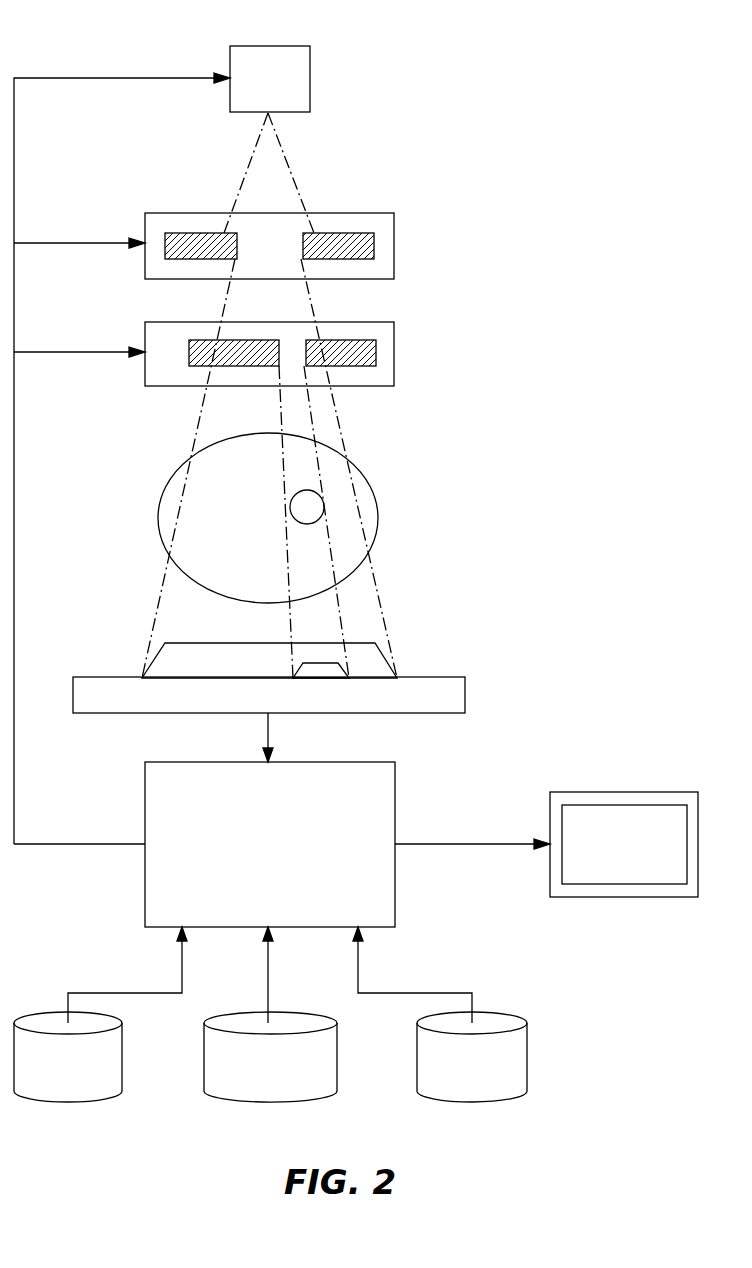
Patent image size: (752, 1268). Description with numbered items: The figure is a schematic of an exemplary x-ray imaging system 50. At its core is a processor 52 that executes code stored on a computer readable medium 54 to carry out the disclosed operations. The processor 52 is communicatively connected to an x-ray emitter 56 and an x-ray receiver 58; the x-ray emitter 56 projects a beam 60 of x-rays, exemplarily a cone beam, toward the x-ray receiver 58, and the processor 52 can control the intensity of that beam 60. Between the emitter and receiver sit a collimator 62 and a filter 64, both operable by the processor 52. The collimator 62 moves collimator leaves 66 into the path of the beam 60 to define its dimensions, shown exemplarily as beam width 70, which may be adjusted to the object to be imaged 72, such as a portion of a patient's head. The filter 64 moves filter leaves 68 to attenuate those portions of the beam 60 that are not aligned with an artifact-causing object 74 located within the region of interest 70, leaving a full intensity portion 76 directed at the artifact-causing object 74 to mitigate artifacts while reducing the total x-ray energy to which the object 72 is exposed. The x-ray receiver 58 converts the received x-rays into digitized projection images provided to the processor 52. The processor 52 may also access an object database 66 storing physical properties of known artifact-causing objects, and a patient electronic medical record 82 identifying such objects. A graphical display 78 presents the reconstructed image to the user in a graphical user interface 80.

The x-ray imaging system 50 is at (580, 318).
The processor 52 is at (397, 794).
The computer readable medium 54 is at (124, 1058).
The x-ray emitter 56 is at (311, 77).
The x-ray receiver 58 is at (467, 690).
The beam 60 is at (272, 174).
The collimator 62 is at (396, 243).
The filter 64 is at (396, 352).
The collimator leaves / object database 66 is at (183, 233).
The filter leaves 68 is at (202, 340).
The beam width 70 is at (218, 643).
The object to be imaged 72 is at (368, 478).
The artifact-causing object 74 is at (306, 508).
The full intensity portion 76 is at (320, 663).
The graphical display 78 is at (655, 791).
The graphical user interface 80 is at (611, 846).
The patient electronic medical record 82 is at (529, 1058).